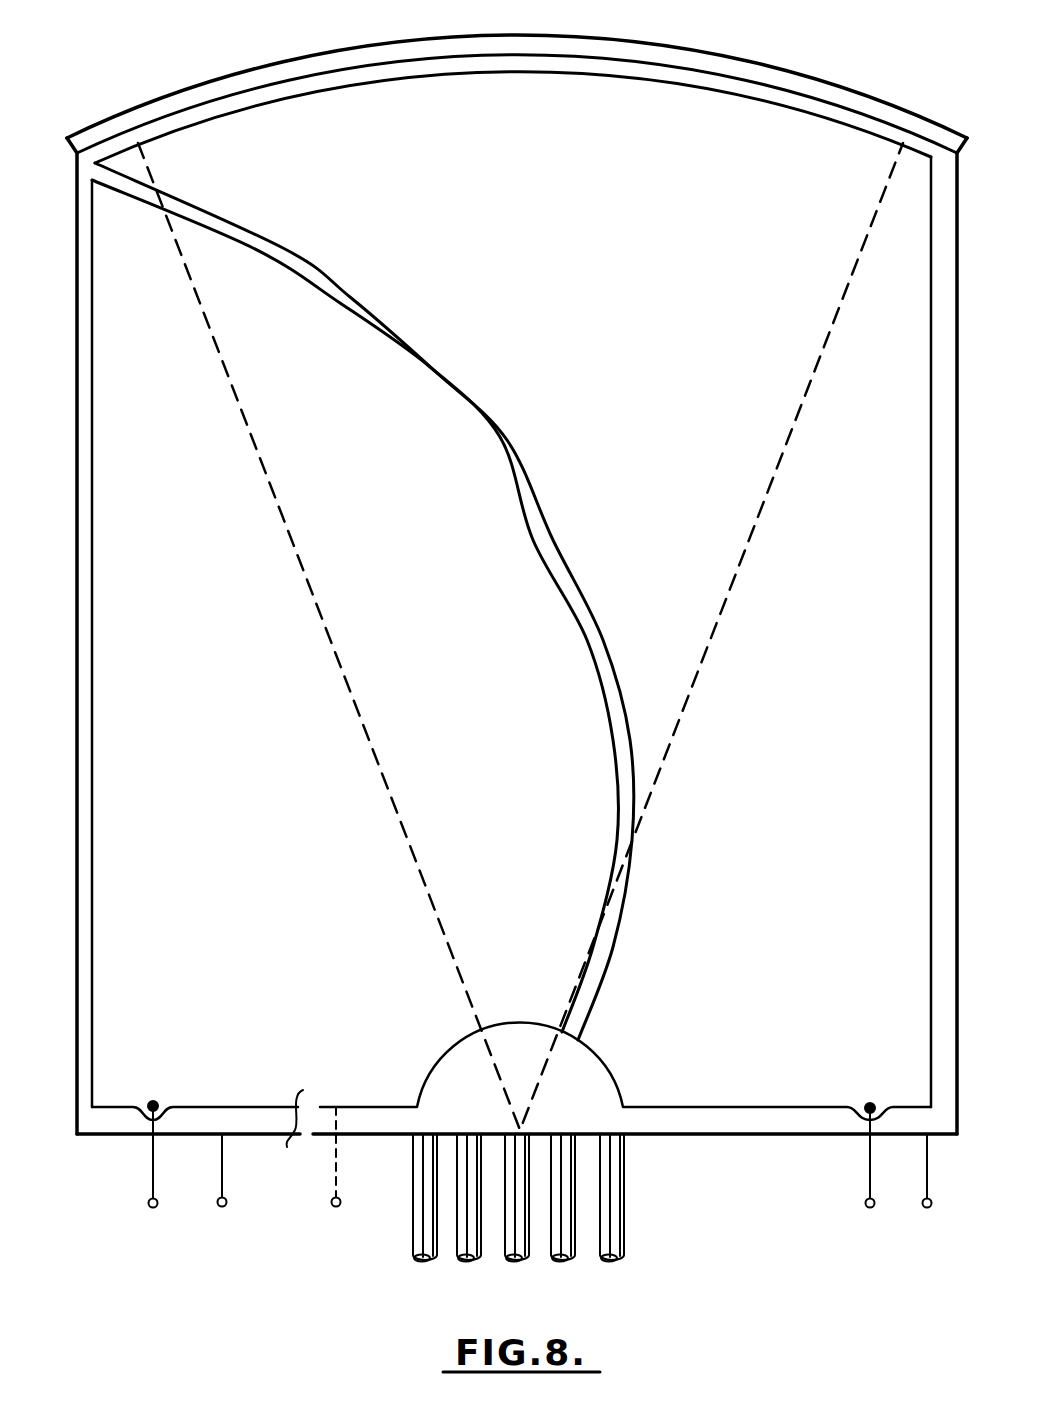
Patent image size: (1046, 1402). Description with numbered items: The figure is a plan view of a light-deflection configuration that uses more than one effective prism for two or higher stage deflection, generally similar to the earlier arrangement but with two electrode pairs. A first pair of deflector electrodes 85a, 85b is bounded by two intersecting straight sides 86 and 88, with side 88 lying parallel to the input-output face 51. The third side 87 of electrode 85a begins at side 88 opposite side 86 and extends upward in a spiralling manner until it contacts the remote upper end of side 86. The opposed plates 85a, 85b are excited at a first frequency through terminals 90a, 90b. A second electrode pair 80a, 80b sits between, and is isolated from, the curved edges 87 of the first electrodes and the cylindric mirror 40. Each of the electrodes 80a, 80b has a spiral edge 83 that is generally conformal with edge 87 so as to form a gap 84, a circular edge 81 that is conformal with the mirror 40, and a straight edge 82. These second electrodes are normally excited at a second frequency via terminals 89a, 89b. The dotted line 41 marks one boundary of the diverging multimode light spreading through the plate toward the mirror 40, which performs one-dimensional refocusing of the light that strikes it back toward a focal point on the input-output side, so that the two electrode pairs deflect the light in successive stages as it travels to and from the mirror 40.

The cylindric mirror 40 is at (517, 570).
The second electrode pair electrode 80a is at (563, 98).
The second electrode pair electrode 80b is at (430, 63).
The circular edge 81 is at (750, 96).
The straight edge 82 is at (931, 640).
The spiral edge 83 is at (433, 370).
The gap 84 is at (340, 300).
The straight side 86 is at (94, 859).
The third side 87 is at (363, 601).
The dotted line 41 is at (332, 642).
The straight side 88 is at (257, 1105).
The input-output face 51 is at (712, 1137).
The deflector electrode 85a is at (281, 1131).
The deflector electrode 85b is at (338, 1150).
The terminal 89a is at (862, 1207).
The terminal 89b is at (930, 1208).
The terminal 90a is at (153, 1210).
The terminal 90b is at (228, 1204).